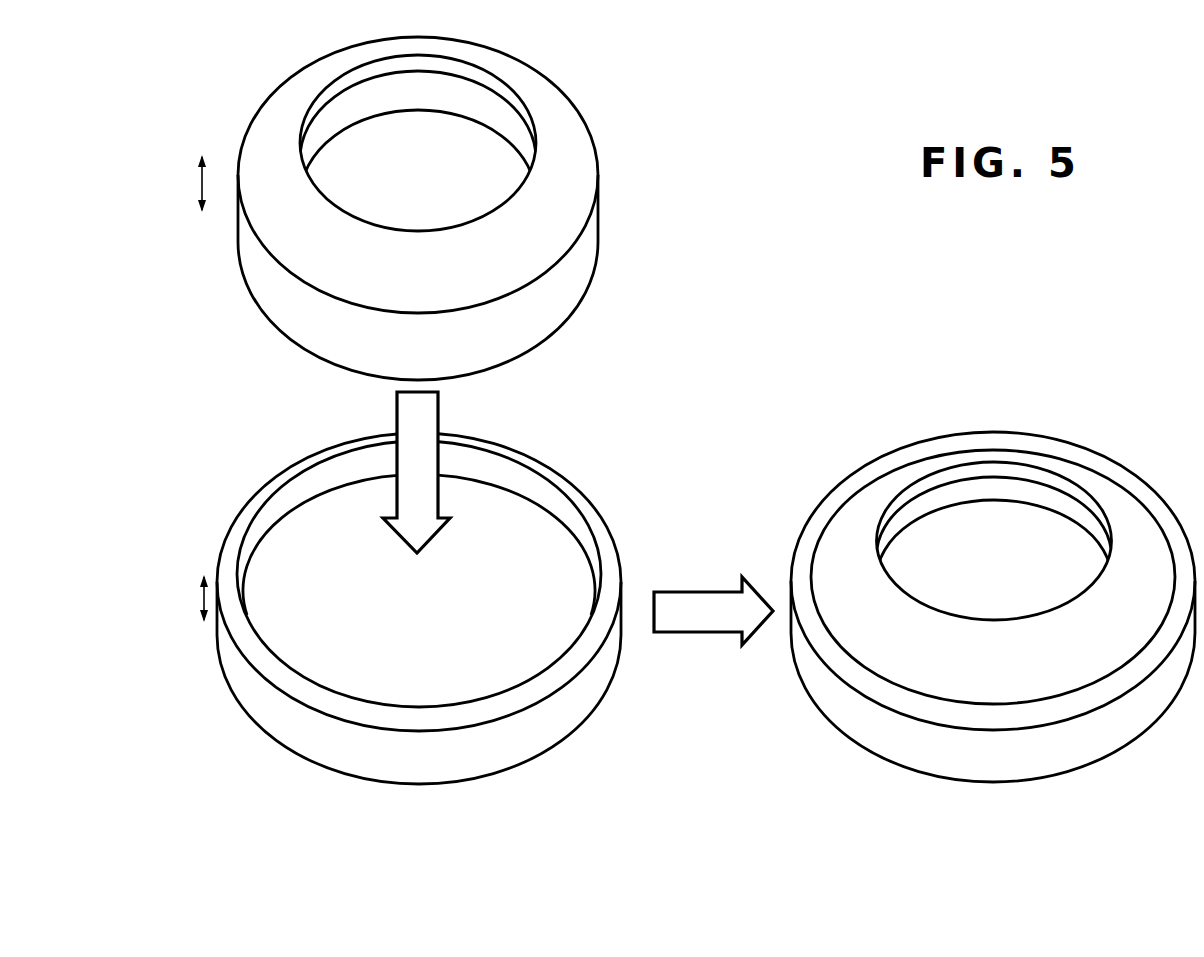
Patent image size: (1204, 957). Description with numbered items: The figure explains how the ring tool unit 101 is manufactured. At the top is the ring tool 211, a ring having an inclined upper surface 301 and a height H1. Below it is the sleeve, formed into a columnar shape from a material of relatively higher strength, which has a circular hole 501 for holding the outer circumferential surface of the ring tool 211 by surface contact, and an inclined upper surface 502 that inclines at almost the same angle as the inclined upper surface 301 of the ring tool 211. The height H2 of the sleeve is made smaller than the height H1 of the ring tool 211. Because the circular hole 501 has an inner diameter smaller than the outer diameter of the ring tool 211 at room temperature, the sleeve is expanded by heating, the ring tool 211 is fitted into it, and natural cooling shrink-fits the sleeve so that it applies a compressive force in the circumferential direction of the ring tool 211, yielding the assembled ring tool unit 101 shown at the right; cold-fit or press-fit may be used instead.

The ring tool 211 is at (236, 126).
The inclined upper surface of the ring tool 301 is at (563, 163).
The circular hole 501 is at (568, 518).
The inclined upper surface of the sleeve 502 is at (600, 537).
The ring tool unit 101 is at (836, 472).
The height of the ring tool H1 is at (186, 183).
The height of the sleeve H2 is at (187, 598).